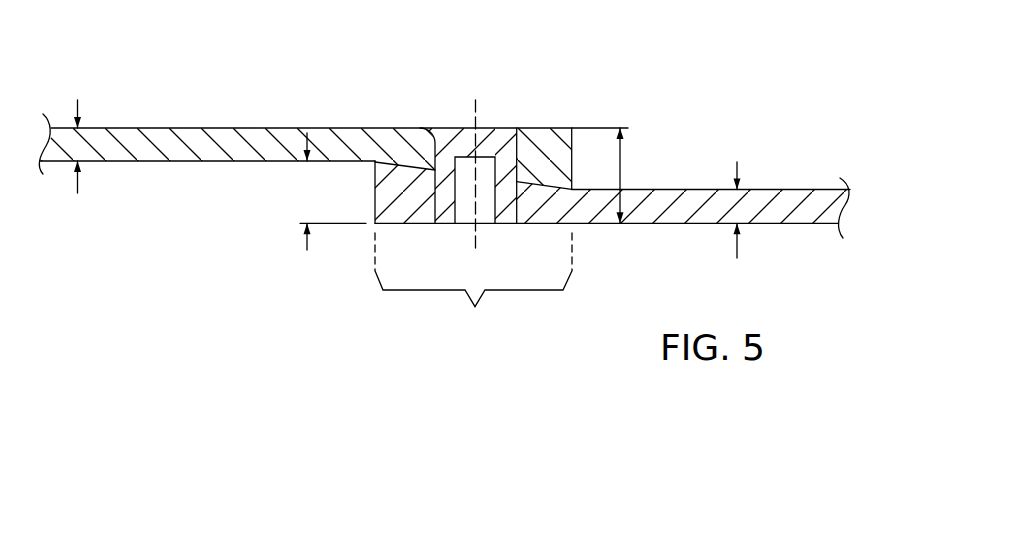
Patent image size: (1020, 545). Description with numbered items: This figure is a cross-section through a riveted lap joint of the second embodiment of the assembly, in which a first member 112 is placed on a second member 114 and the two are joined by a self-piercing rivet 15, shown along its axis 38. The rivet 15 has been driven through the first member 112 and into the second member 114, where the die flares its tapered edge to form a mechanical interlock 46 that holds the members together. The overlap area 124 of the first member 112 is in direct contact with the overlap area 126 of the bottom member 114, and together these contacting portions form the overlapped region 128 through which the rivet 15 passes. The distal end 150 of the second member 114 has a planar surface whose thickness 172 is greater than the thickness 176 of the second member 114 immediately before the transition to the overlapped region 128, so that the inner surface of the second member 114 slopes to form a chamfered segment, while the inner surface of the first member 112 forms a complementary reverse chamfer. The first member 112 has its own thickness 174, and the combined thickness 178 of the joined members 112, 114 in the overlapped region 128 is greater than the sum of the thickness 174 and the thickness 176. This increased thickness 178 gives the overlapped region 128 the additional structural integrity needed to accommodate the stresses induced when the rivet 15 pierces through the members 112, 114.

The first member 112 is at (187, 90).
The second member 114 is at (806, 238).
The self-piercing rivet 15 is at (508, 140).
The fastener axis 38 is at (474, 101).
The mechanical interlock 46 is at (517, 212).
The overlap area 124 is at (552, 190).
The overlap area 126 is at (406, 164).
The overlapped region 128 is at (473, 285).
The distal end 150 is at (375, 201).
The thickness 172 is at (307, 248).
The thickness 174 is at (75, 145).
The thickness 176 is at (732, 212).
The thickness 178 is at (622, 158).